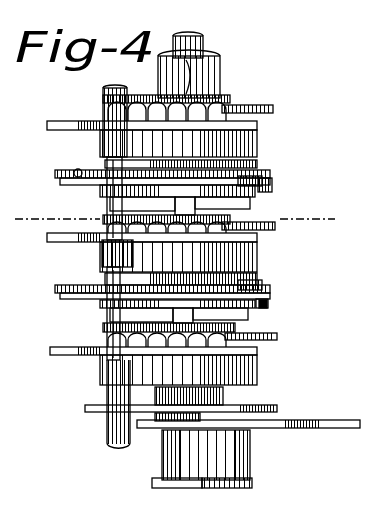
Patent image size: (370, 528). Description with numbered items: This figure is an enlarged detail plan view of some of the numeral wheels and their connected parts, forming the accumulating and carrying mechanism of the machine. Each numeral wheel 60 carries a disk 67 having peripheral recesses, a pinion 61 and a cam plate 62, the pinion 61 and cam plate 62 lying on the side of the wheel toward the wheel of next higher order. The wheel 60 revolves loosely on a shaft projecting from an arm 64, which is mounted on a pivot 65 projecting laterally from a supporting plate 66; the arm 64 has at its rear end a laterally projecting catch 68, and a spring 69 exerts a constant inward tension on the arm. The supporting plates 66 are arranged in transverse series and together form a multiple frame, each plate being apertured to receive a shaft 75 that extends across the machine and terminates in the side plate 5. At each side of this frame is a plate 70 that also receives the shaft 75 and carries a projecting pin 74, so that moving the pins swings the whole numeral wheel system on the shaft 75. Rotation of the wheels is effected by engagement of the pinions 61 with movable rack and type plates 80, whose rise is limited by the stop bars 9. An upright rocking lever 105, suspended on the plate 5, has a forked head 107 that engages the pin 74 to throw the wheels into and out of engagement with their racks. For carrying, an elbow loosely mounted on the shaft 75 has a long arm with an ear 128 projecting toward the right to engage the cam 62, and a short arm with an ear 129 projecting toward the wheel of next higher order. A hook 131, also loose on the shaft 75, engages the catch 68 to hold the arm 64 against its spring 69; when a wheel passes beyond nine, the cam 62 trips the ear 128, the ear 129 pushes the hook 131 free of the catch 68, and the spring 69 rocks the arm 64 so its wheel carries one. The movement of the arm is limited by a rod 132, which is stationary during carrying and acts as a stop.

The plate 5 is at (296, 428).
The stop bar 9 is at (32, 221).
The numeral wheel 60 is at (257, 140).
The pinion 61 is at (230, 101).
The cam plate 62 is at (103, 100).
The arm 64 is at (60, 173).
The pivot 65 is at (103, 189).
The supporting plate 66 is at (63, 183).
The disk 67 is at (257, 124).
The catch 68 is at (258, 182).
The spring 69 is at (78, 169).
The plate 70 is at (277, 408).
The pin 74 is at (163, 458).
The shaft 75 is at (204, 44).
The rack and type plate 80 is at (273, 110).
The rocking lever 105 is at (252, 485).
The forked head 107 is at (152, 485).
The ear 128 is at (108, 218).
The ear 129 is at (237, 180).
The hook 131 is at (272, 188).
The rod 132 is at (107, 428).